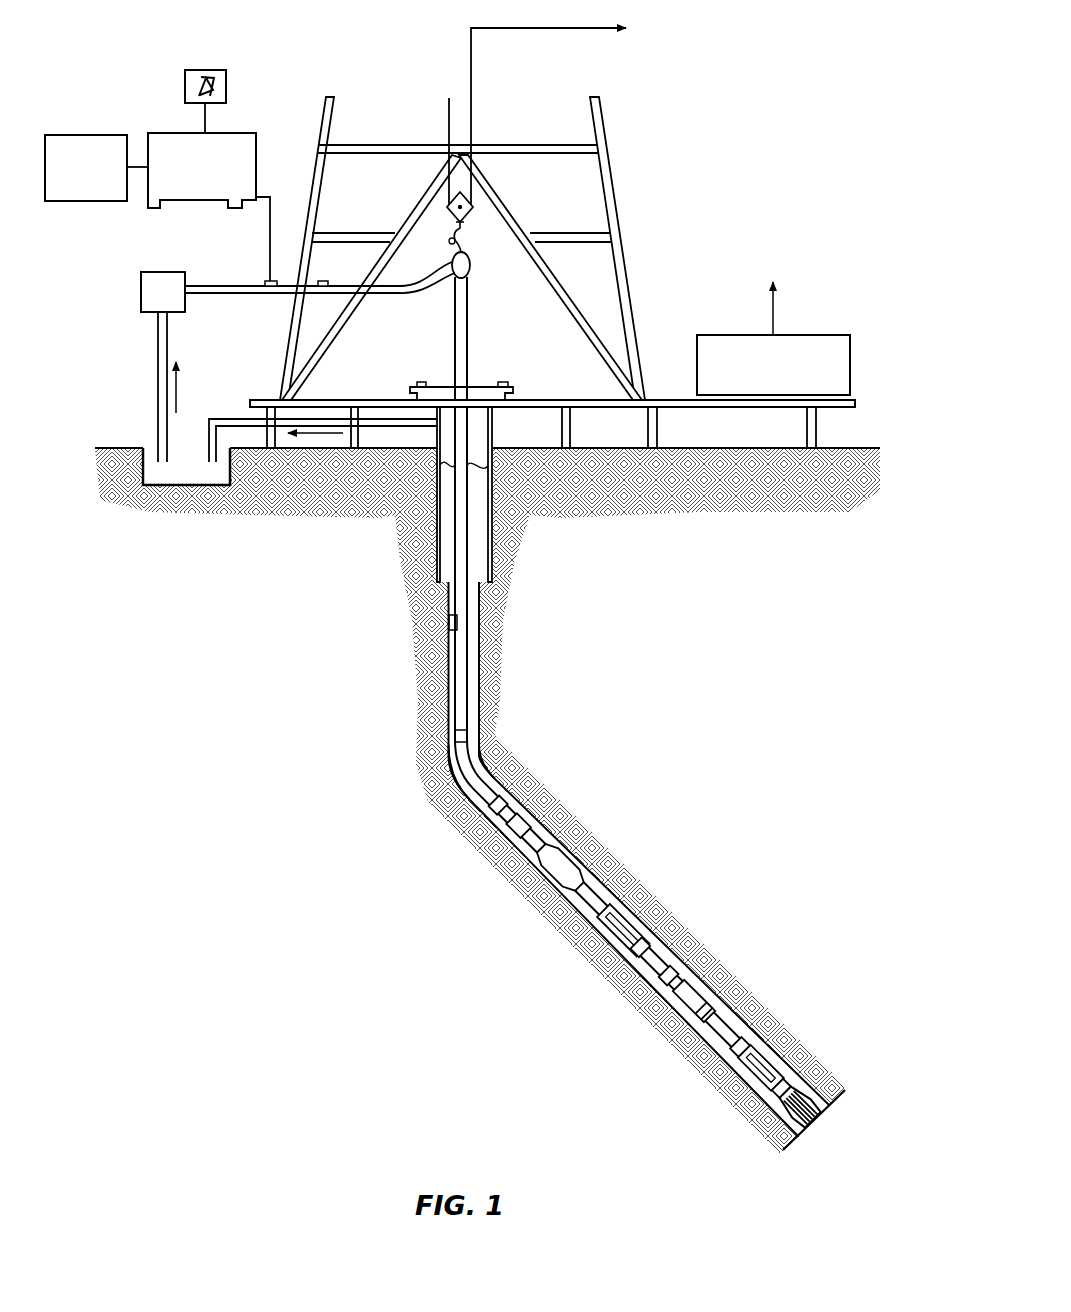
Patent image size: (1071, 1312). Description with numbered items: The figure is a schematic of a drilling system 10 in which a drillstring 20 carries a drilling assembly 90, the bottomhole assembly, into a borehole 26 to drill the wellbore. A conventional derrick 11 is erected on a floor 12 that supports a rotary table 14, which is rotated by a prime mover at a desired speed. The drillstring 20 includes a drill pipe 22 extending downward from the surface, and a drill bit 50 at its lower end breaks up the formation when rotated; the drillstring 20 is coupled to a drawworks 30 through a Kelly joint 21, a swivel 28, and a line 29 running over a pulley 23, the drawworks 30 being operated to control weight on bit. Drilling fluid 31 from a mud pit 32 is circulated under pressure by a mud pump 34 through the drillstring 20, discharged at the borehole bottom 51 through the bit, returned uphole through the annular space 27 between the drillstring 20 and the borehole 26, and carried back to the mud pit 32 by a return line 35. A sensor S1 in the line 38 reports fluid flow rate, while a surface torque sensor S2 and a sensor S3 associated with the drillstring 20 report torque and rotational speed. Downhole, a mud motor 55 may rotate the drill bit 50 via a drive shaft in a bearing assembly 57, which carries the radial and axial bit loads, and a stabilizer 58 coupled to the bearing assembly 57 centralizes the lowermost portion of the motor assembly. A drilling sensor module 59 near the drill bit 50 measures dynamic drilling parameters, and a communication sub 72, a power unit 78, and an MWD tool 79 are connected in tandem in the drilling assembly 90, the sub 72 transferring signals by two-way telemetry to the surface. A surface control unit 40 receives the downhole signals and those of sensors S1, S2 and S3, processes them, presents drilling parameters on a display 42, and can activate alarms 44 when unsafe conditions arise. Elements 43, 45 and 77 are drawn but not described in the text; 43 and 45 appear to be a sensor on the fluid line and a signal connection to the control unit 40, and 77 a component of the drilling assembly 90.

The drilling system 10 is at (386, 35).
The derrick 11 is at (620, 250).
The floor 12 is at (645, 400).
The rotary table 14 is at (473, 386).
The drillstring 20 is at (476, 676).
The Kelly joint 21 is at (470, 312).
The drill pipe 22 is at (448, 655).
The pulley 23 is at (463, 206).
The borehole 26 is at (484, 762).
The annular space 27 is at (503, 793).
The swivel 28 is at (455, 275).
The line 29 is at (473, 115).
The drawworks 30 is at (818, 335).
The drilling fluid 31 is at (153, 462).
The mud pit 32 is at (175, 483).
The mud pump 34 is at (155, 272).
The return line 35 is at (398, 428).
The line 38 is at (158, 375).
The surface control unit 40 is at (185, 132).
The display/monitor 42 is at (205, 68).
The flow sensor 43 is at (267, 281).
The alarms 44 is at (95, 205).
The signal line 45 is at (265, 196).
The drill bit 50 is at (813, 1084).
The borehole bottom 51 is at (787, 1150).
The downhole motor 55 is at (667, 948).
The bearing assembly 57 is at (780, 1048).
The stabilizer 58 is at (785, 1066).
The drilling sensor module 59 is at (770, 1096).
The communication sub 72 is at (448, 768).
The stabilizer 77 is at (549, 889).
The power unit 78 is at (469, 804).
The MWD tool 79 is at (490, 828).
The drilling assembly 90 is at (693, 843).
The sensor S1 is at (323, 281).
The surface torque sensor S2 is at (504, 382).
The sensor S3 is at (421, 382).